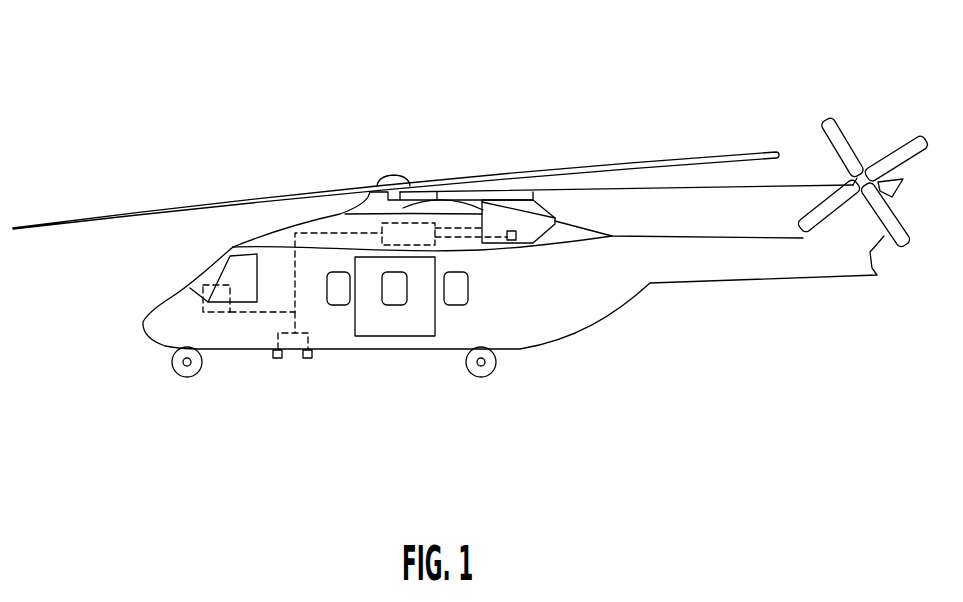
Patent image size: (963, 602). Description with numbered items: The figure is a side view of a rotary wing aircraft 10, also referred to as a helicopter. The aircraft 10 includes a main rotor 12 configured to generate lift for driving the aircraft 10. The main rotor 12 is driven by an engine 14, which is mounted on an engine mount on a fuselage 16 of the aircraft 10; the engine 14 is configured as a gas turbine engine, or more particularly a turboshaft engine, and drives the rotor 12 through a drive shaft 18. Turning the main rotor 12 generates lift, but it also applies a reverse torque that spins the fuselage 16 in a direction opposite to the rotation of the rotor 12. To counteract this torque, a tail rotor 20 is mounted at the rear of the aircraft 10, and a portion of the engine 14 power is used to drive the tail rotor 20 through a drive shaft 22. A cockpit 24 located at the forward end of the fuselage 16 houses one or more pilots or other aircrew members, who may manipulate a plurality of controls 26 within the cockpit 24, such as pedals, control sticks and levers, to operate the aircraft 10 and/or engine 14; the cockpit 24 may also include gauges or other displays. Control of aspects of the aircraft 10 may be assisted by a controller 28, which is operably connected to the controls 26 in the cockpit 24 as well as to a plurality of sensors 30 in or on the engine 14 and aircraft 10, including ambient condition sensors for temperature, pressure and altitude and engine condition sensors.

The rotary wing aircraft 10 is at (180, 60).
The main rotor 12 is at (538, 171).
The engine 14 is at (490, 199).
The fuselage 16 is at (618, 253).
The drive shaft 18 is at (457, 191).
The tail rotor 20 is at (898, 156).
The drive shaft 22 is at (788, 184).
The cockpit 24 is at (228, 259).
The controls 26 is at (203, 303).
The controller 28 is at (382, 222).
The sensors 30 is at (511, 243).